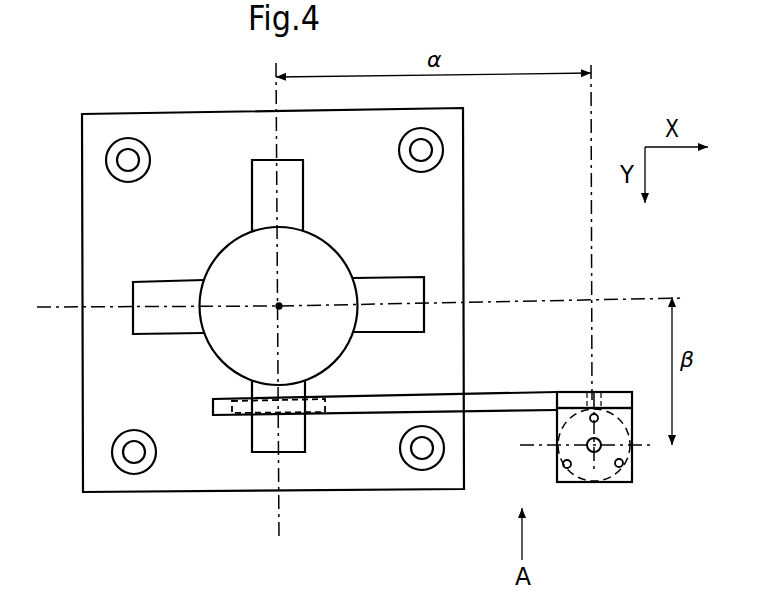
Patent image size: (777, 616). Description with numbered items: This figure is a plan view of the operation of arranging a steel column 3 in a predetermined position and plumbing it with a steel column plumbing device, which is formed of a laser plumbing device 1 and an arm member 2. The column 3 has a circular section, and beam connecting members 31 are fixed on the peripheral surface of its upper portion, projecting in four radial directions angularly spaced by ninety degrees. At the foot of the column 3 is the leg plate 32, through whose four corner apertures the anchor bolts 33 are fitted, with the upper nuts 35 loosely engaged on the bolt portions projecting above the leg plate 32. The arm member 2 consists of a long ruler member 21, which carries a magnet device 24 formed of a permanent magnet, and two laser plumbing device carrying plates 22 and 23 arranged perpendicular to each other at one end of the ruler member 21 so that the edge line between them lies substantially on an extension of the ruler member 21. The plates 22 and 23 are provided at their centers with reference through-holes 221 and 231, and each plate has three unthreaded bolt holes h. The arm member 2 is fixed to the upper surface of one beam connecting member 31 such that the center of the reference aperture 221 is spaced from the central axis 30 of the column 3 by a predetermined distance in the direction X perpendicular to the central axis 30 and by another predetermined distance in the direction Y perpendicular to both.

The laser plumbing device 1 is at (617, 479).
The arm member 2 is at (514, 391).
The ruler member 21 is at (425, 398).
The laser plumbing device carrying plate 22 is at (632, 477).
The reference through-hole 221 is at (592, 452).
The laser plumbing device carrying plate 23 is at (624, 392).
The reference through-hole 231 is at (582, 390).
The magnet device 24 is at (313, 415).
The steel column 3 is at (213, 357).
The central axis 30 is at (279, 306).
The beam connecting member 31 is at (262, 167).
The leg plate 32 is at (182, 493).
The anchor bolt 33 is at (128, 160).
The upper nut 35 is at (118, 153).
The unthreaded bolt hole h is at (600, 419).